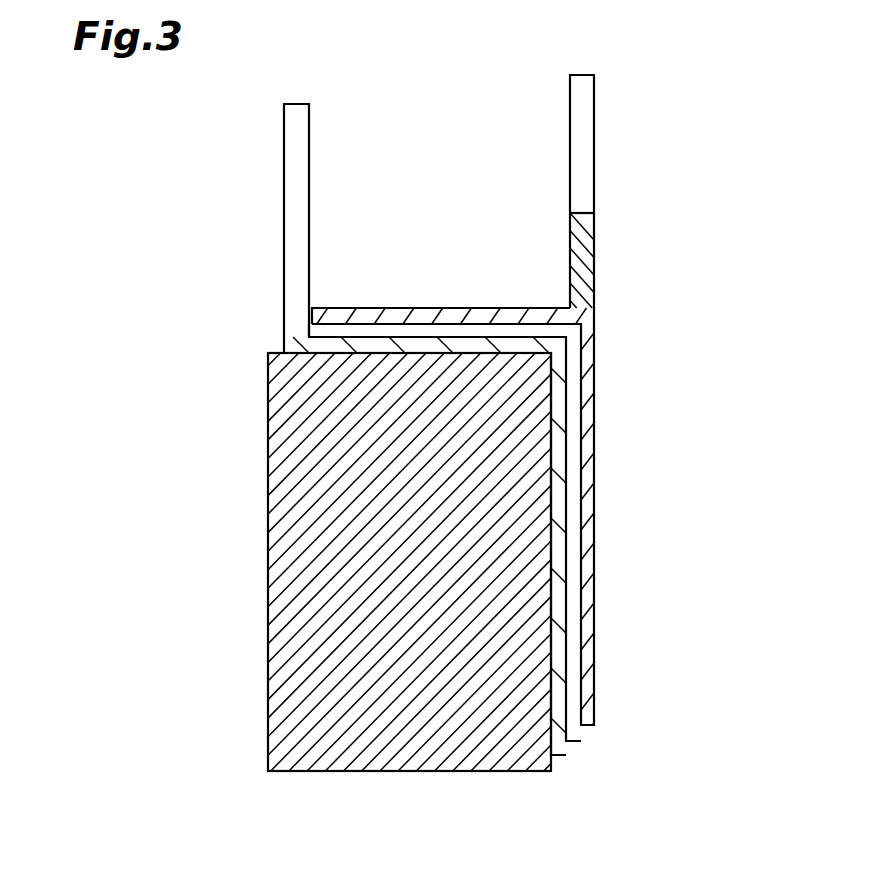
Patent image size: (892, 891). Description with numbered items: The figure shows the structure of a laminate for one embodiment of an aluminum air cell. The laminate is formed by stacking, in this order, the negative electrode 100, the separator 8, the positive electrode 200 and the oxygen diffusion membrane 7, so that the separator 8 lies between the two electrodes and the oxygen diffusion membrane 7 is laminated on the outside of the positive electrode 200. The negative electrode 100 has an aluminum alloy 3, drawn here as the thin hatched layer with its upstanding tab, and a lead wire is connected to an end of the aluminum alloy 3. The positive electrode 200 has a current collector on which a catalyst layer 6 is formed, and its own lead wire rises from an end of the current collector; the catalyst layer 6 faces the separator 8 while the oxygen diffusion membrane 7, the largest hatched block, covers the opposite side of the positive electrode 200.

The positive electrode 200 is at (283, 198).
The negative electrode 100 is at (597, 142).
The aluminum alloy 3 is at (585, 457).
The separator 8 is at (573, 529).
The catalyst layer 6 is at (557, 603).
The oxygen diffusion membrane 7 is at (280, 575).